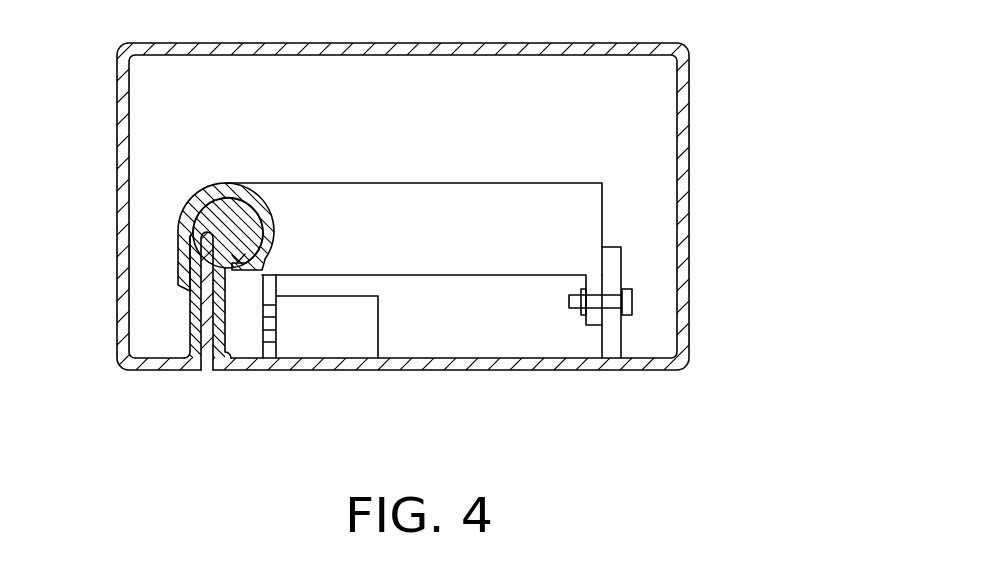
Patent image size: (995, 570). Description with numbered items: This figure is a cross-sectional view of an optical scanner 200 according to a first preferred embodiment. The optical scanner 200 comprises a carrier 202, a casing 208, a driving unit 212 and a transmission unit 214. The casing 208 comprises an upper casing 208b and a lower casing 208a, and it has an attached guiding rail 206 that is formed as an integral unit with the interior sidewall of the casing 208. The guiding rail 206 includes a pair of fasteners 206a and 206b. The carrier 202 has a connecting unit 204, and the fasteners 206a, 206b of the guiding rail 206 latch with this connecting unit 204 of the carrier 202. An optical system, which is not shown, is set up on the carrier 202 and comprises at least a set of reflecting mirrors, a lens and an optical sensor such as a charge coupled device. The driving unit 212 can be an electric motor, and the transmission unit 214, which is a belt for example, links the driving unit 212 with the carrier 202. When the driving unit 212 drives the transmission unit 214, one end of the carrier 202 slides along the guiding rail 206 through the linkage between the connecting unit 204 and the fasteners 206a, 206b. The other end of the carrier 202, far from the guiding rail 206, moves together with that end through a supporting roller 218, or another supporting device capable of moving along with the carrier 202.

The optical scanner 200 is at (795, 53).
The carrier 202 is at (434, 208).
The connecting unit 204 is at (207, 197).
The guiding rail 206 is at (248, 221).
The fastener 206a is at (237, 261).
The fastener 206b is at (194, 292).
The casing 208 is at (484, 206).
The lower casing 208a is at (684, 212).
The upper casing 208b is at (688, 135).
The driving unit 212 is at (338, 330).
The transmission unit 214 is at (266, 340).
The supporting roller 218 is at (610, 350).